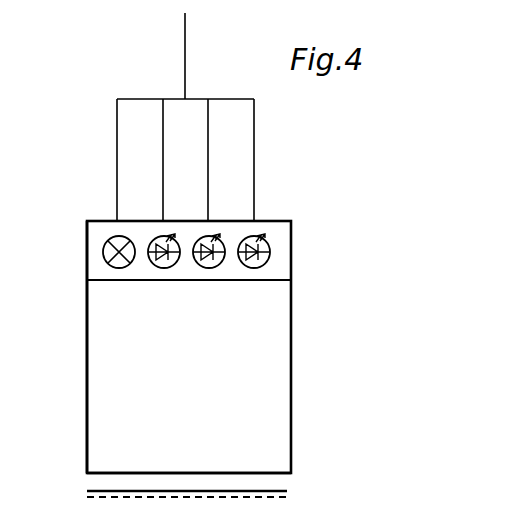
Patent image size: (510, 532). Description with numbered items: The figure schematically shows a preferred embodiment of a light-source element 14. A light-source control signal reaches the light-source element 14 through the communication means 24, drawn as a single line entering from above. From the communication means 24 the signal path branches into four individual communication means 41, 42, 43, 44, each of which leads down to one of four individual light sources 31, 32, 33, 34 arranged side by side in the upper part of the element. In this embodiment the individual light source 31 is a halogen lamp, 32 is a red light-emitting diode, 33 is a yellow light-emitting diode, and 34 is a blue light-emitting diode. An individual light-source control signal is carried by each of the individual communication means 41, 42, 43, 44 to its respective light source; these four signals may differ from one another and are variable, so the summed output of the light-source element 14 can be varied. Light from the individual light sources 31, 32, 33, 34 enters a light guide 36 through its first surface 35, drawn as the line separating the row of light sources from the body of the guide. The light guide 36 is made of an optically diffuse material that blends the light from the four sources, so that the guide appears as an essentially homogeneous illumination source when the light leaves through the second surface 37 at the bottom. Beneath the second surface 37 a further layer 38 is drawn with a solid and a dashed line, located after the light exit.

The light-source element 14 is at (75, 340).
The communication means 24 is at (190, 62).
The halogen lamp 31 is at (110, 240).
The red light-emitting diode 32 is at (155, 240).
The yellow light-emitting diode 33 is at (200, 240).
The blue light-emitting diode 34 is at (245, 240).
The first surface 35 is at (250, 280).
The light guide 36 is at (247, 380).
The second surface 37 is at (247, 473).
The mounting surface 38 is at (252, 497).
The individual communication means 41 is at (117, 144).
The individual communication means 42 is at (163, 144).
The individual communication means 43 is at (208, 144).
The individual communication means 44 is at (254, 144).